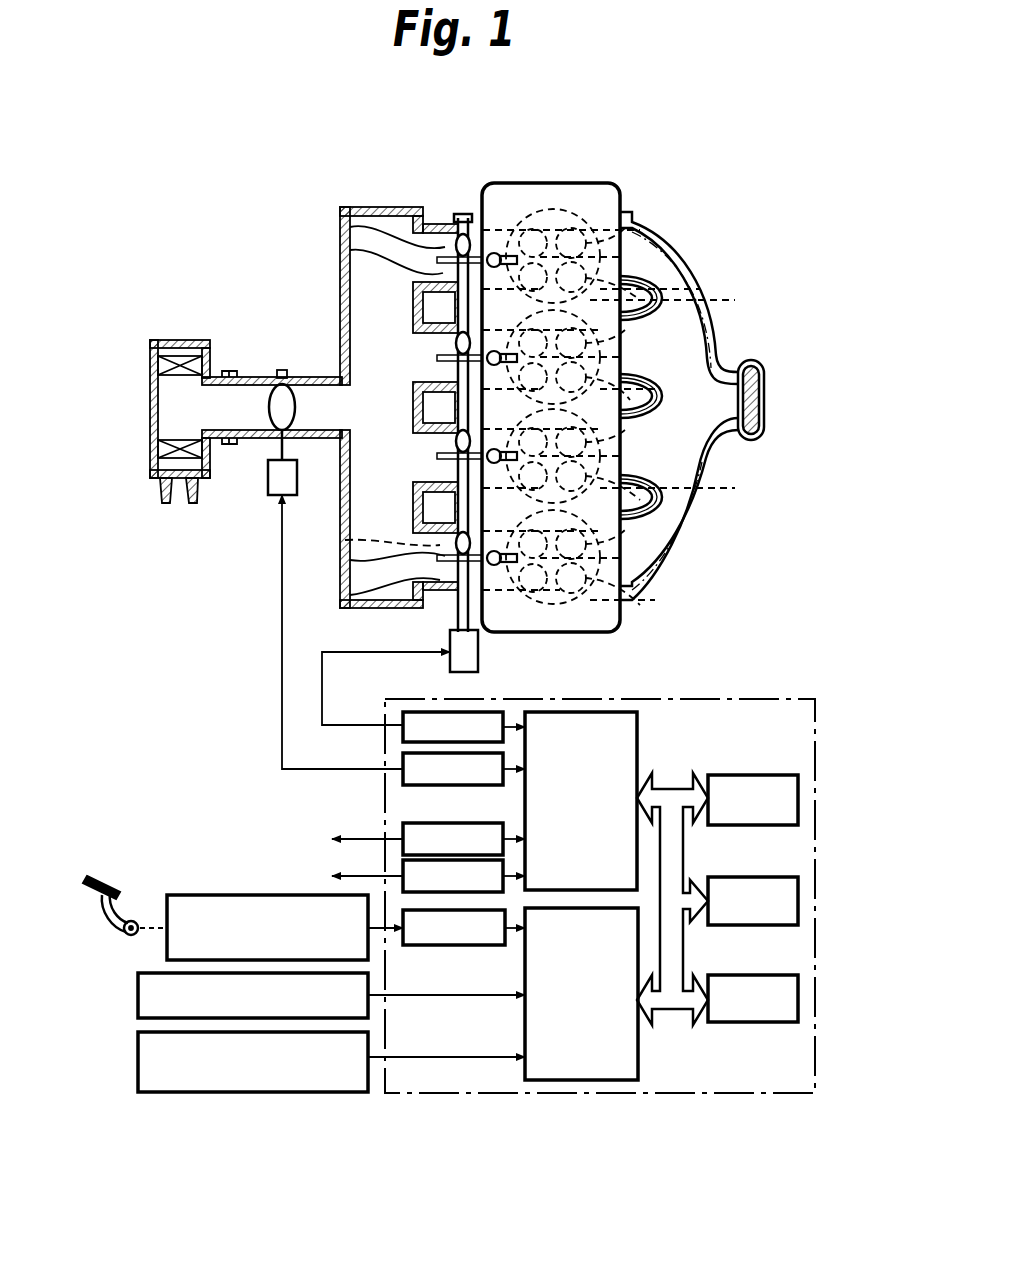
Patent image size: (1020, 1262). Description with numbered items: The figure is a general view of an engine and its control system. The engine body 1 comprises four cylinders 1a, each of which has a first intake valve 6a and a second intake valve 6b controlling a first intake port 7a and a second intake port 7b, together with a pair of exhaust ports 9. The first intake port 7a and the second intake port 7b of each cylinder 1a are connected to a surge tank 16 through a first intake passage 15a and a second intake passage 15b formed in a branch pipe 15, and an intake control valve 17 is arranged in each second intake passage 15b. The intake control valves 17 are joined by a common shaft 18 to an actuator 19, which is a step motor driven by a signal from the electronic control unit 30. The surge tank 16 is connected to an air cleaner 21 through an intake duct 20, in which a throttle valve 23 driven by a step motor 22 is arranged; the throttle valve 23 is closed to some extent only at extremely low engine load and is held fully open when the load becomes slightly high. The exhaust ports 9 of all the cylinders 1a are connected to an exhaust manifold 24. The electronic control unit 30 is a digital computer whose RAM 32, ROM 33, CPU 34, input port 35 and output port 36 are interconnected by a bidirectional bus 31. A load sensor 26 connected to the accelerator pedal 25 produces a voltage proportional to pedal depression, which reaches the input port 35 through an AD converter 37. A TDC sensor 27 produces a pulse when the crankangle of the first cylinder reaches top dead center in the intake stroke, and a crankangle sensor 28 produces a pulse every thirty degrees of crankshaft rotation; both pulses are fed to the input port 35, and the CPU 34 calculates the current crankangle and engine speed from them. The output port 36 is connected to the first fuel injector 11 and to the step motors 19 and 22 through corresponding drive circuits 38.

The engine body 1 is at (620, 186).
The cylinder 1a is at (587, 216).
The first intake valve 6a is at (692, 288).
The second intake valve 6b is at (556, 215).
The first intake port 7a is at (545, 630).
The second intake port 7b is at (514, 232).
The exhaust port 9 is at (640, 232).
The first fuel injector 11 is at (505, 235).
The branch pipe 15 is at (447, 228).
The first intake passage 15a is at (348, 252).
The second intake passage 15b is at (348, 226).
The surge tank 16 is at (340, 300).
The intake control valve 17 is at (458, 228).
The common shaft 18 is at (435, 407).
The actuator 19 is at (456, 674).
The intake duct 20 is at (244, 377).
The air cleaner 21 is at (150, 405).
The step motor 22 is at (268, 476).
The throttle valve 23 is at (292, 400).
The exhaust manifold 24 is at (720, 458).
The accelerator pedal 25 is at (115, 883).
The load sensor 26 is at (206, 895).
The TDC sensor 27 is at (138, 985).
The crankangle sensor 28 is at (138, 1052).
The electronic control unit 30 is at (818, 740).
The bidirectional bus 31 is at (670, 788).
The RAM 32 is at (772, 775).
The ROM 33 is at (756, 877).
The CPU 34 is at (758, 975).
The input port 35 is at (640, 1058).
The output port 36 is at (638, 728).
The AD converter 37 is at (452, 945).
The drive circuit 38 is at (403, 758).